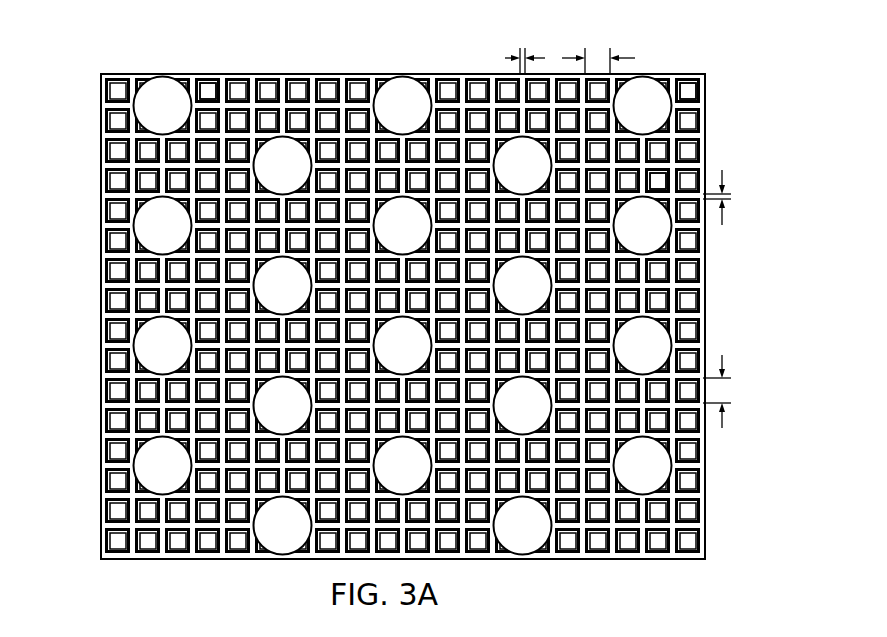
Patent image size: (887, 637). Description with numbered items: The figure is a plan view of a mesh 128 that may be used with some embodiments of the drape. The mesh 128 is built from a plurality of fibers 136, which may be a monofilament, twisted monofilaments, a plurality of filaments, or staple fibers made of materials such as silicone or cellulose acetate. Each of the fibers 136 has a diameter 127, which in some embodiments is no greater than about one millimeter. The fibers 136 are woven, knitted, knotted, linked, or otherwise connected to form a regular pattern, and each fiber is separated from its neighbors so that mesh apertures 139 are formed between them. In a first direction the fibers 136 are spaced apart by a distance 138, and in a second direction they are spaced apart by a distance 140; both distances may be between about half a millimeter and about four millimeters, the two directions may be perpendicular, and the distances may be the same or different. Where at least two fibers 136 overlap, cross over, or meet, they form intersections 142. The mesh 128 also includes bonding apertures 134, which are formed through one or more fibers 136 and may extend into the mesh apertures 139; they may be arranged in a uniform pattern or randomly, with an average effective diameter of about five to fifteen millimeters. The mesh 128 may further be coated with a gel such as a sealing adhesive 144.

The diameter 127 is at (540, 56).
The mesh 128 is at (723, 459).
The bonding apertures 134 is at (403, 316).
The fibers 136 is at (463, 83).
The distance 138 is at (622, 56).
The mesh apertures 139 is at (688, 83).
The distance 140 is at (722, 425).
The intersections 142 is at (650, 165).
The sealing adhesive 144 is at (210, 82).